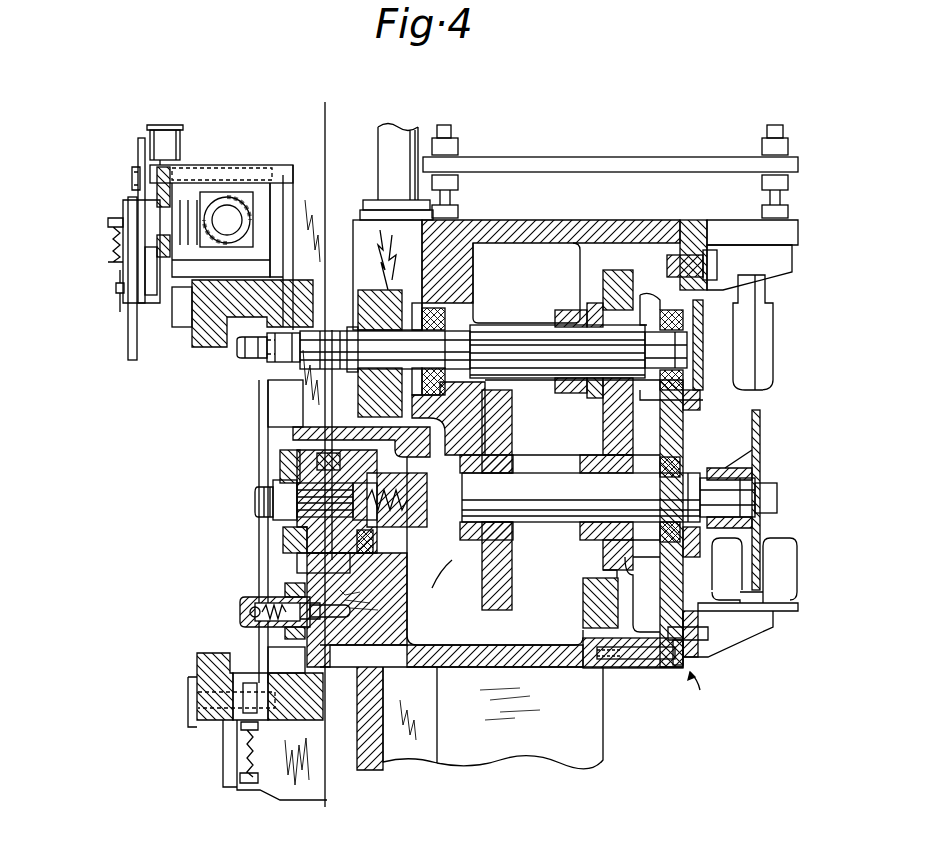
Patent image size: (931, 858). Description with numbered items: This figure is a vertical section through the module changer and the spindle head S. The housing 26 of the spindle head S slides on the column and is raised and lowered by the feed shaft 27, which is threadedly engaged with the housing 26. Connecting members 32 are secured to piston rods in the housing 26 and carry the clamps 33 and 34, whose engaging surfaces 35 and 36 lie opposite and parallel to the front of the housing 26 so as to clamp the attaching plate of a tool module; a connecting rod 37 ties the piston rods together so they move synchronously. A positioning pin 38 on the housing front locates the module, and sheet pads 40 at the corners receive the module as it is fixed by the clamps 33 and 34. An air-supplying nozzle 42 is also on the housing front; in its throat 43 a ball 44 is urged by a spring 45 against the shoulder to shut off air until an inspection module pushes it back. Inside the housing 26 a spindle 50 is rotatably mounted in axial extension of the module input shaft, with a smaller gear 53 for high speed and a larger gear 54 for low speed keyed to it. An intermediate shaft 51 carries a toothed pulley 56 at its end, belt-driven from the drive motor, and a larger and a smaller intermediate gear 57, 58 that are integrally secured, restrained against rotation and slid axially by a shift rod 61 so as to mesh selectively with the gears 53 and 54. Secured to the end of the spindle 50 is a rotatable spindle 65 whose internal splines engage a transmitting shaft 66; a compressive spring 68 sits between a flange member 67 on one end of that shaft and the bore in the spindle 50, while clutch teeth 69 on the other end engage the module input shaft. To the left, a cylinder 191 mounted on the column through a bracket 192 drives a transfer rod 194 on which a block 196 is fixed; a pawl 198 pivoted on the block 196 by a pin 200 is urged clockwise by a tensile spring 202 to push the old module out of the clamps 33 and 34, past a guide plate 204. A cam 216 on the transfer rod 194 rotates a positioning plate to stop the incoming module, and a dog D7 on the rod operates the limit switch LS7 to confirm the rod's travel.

The housing 26 is at (540, 220).
The feed shaft 27 is at (405, 130).
The connecting member 32 is at (273, 428).
The clamp 33 is at (200, 347).
The clamp 34 is at (200, 672).
The engaging surface 35 is at (236, 368).
The engaging surface 36 is at (223, 675).
The connecting rod 37 is at (583, 613).
The positioning pin 38 is at (252, 360).
The sheet pad 40 is at (265, 393).
The air-supplying nozzle 42 is at (255, 598).
The throat 43 is at (250, 612).
The ball 44 is at (250, 622).
The spring 45 is at (288, 592).
The spindle 50 is at (570, 525).
The intermediate shaft 51 is at (510, 323).
The smaller gear 53 is at (605, 450).
The larger gear 54 is at (525, 417).
The pulley 56 is at (358, 302).
The larger intermediate gear 57 is at (668, 266).
The smaller intermediate gear 58 is at (560, 308).
The shift rod 61 is at (590, 300).
The rotatable spindle 65 is at (298, 545).
The transmitting shaft 66 is at (280, 500).
The flange member 67 is at (431, 574).
The compressive spring 68 is at (470, 540).
The clutch teeth 69 is at (258, 488).
The cylinder 191 is at (235, 205).
The bracket 192 is at (210, 192).
The transfer rod 194 is at (152, 218).
The block 196 is at (137, 192).
The pawl 198 is at (126, 323).
The pin 200 is at (114, 290).
The tensile spring 202 is at (112, 232).
The guide plate 204 is at (183, 322).
The cam 216 is at (150, 290).
The limit switch LS7 is at (168, 130).
The dog D7 is at (135, 185).
The spindle head S is at (707, 689).